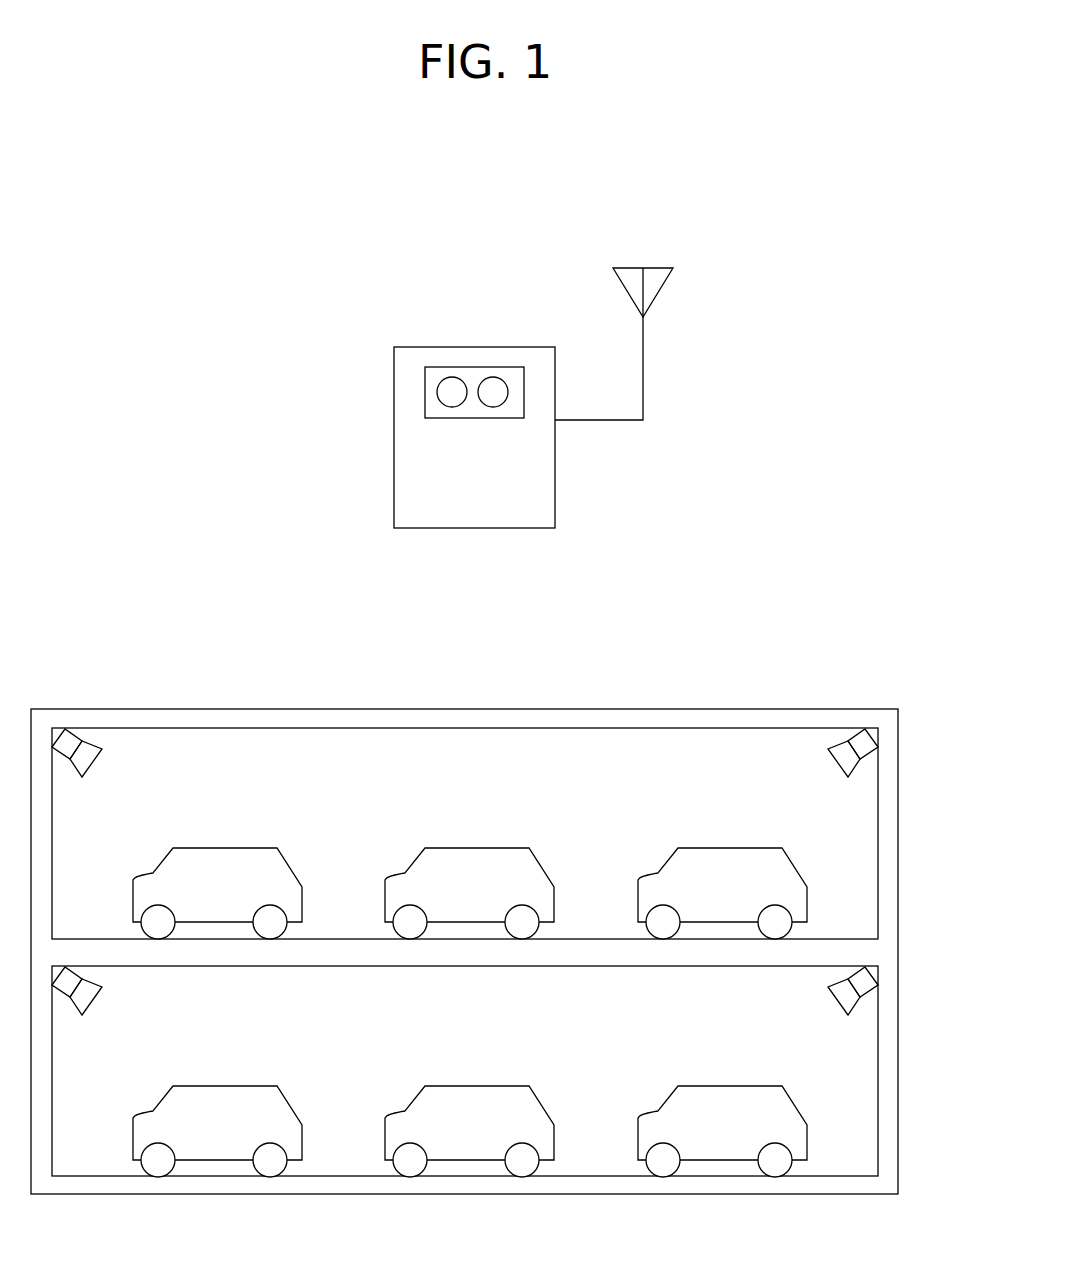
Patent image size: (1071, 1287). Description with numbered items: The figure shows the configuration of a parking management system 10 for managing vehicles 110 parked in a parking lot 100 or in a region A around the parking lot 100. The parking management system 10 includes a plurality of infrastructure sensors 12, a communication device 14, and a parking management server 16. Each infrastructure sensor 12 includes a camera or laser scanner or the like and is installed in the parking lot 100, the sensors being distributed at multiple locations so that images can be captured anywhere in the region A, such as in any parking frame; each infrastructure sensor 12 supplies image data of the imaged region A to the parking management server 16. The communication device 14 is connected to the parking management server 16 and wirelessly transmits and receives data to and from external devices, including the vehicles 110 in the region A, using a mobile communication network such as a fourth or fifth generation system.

The parking management system 10 is at (724, 206).
The infrastructure sensor 12 is at (103, 761).
The communication device 14 is at (625, 268).
The parking management server 16 is at (420, 347).
The parking lot 100 is at (770, 709).
The vehicle 110 is at (237, 848).
The region A is at (349, 773).